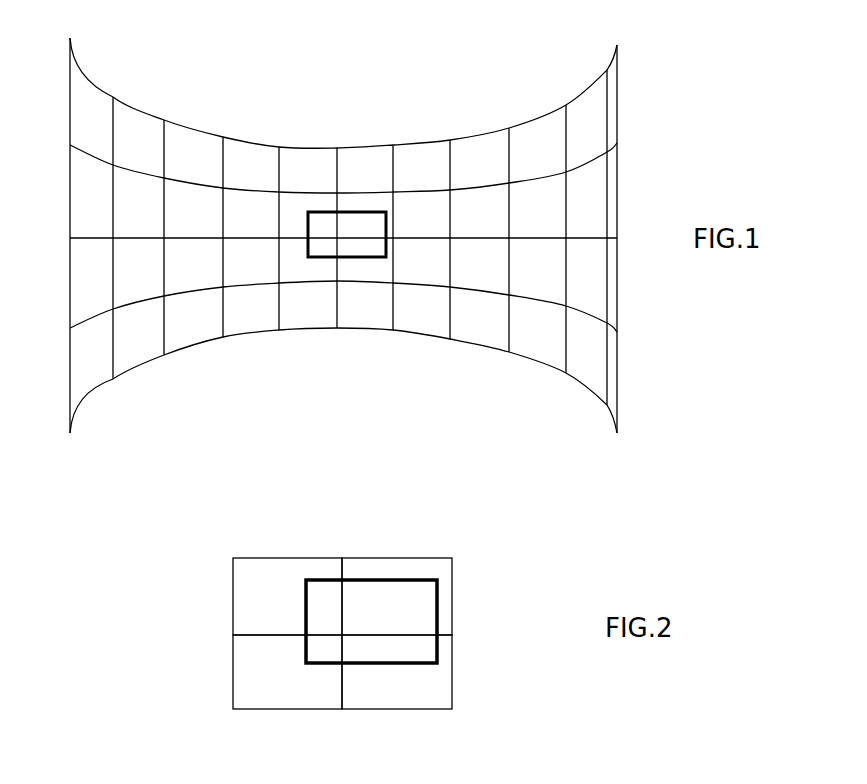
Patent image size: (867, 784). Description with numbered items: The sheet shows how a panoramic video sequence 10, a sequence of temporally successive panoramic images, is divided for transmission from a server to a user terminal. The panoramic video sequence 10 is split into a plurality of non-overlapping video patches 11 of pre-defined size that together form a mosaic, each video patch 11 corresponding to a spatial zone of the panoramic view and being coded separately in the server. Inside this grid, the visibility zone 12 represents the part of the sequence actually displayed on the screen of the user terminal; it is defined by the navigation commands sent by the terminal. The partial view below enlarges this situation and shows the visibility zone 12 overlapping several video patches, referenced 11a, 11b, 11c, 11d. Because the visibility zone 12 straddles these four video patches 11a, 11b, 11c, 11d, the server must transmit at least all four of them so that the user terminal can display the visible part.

In FIG. 1, the panoramic video sequence 10 is at (488, 128).
In FIG. 1, the video patch 11 is at (185, 155).
In FIG. 1, the visibility zone 12 is at (308, 258).
In FIG. 2, the visibility zone 12 is at (385, 580).
In FIG. 2, the video patch 11a is at (257, 598).
In FIG. 2, the video patch 11b is at (257, 673).
In FIG. 2, the video patch 11c is at (437, 570).
In FIG. 2, the video patch 11d is at (437, 680).